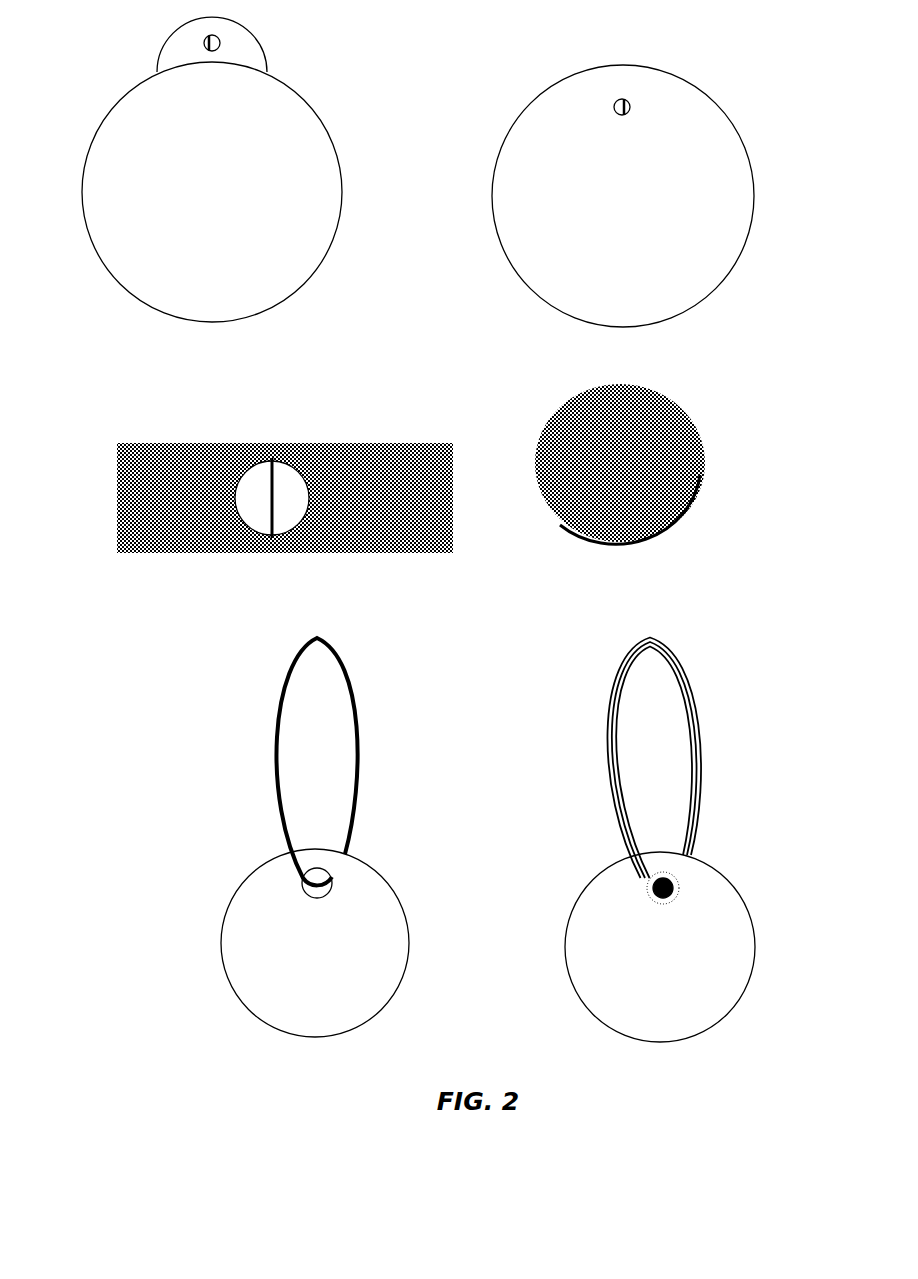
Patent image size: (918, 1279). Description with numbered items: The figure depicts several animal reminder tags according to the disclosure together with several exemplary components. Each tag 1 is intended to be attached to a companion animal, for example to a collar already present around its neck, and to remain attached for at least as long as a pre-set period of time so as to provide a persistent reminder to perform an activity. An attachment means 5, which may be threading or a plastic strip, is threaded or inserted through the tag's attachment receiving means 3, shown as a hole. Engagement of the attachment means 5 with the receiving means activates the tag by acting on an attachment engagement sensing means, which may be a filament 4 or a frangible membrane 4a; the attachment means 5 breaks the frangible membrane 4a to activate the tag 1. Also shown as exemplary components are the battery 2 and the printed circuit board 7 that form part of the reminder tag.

The tag 1 is at (400, 172).
The battery 2 is at (702, 471).
The attachment receiving means 3 is at (602, 116).
The filament 4 is at (601, 110).
The frangible membrane 4a is at (197, 53).
The attachment means 5 is at (597, 802).
The printed circuit board 7 is at (175, 430).